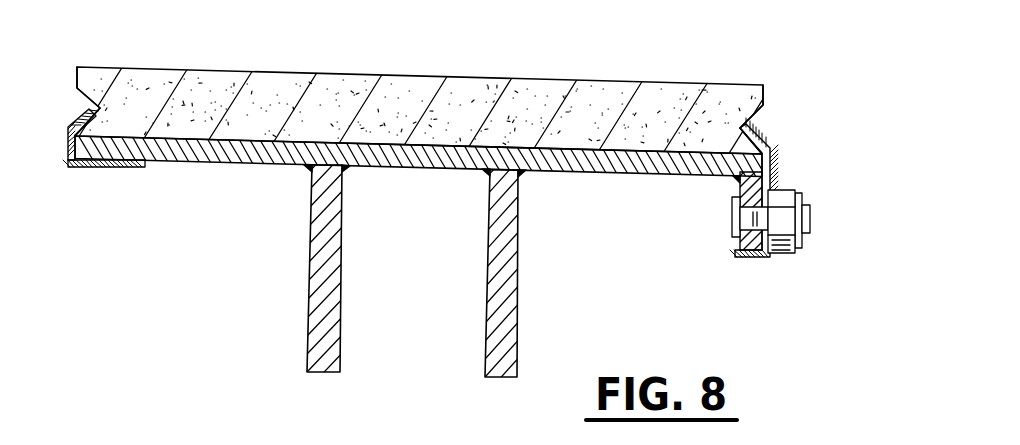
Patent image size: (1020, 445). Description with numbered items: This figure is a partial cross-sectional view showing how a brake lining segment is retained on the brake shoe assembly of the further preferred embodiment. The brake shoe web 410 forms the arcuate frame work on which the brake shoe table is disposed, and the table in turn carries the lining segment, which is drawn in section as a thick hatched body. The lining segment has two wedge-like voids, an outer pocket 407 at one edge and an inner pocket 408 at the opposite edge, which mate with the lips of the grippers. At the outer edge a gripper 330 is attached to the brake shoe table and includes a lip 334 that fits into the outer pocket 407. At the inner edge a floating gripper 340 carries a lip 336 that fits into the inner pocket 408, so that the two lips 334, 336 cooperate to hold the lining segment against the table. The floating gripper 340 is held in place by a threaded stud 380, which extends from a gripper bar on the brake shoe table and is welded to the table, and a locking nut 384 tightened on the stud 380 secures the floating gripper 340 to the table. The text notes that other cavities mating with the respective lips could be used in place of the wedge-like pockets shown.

The outer pocket 407 is at (77, 99).
The inner pocket 408 is at (763, 113).
The gripper 330 is at (117, 167).
The lip 334 is at (68, 122).
The lip 336 is at (757, 135).
The floating gripper 340 is at (772, 165).
The threaded stud 380 is at (812, 225).
The locking nut 384 is at (788, 255).
The brake shoe web 410 is at (342, 283).